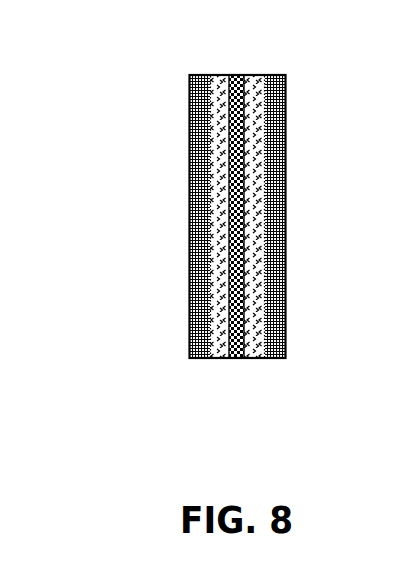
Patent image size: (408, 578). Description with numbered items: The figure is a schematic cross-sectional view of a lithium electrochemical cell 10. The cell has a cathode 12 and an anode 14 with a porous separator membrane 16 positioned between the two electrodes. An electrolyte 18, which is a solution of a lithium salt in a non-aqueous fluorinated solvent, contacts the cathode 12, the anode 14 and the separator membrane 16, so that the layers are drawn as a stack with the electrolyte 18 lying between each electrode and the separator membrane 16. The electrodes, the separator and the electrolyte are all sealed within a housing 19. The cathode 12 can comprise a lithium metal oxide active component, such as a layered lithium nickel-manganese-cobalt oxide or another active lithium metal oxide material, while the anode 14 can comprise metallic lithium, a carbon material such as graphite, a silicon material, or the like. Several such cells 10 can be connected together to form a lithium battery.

The lithium electrochemical cell 10 is at (138, 89).
The cathode 12 is at (190, 133).
The anode 14 is at (284, 121).
The porous separator membrane 16 is at (243, 353).
The electrolyte 18 is at (218, 204).
The housing 19 is at (252, 75).